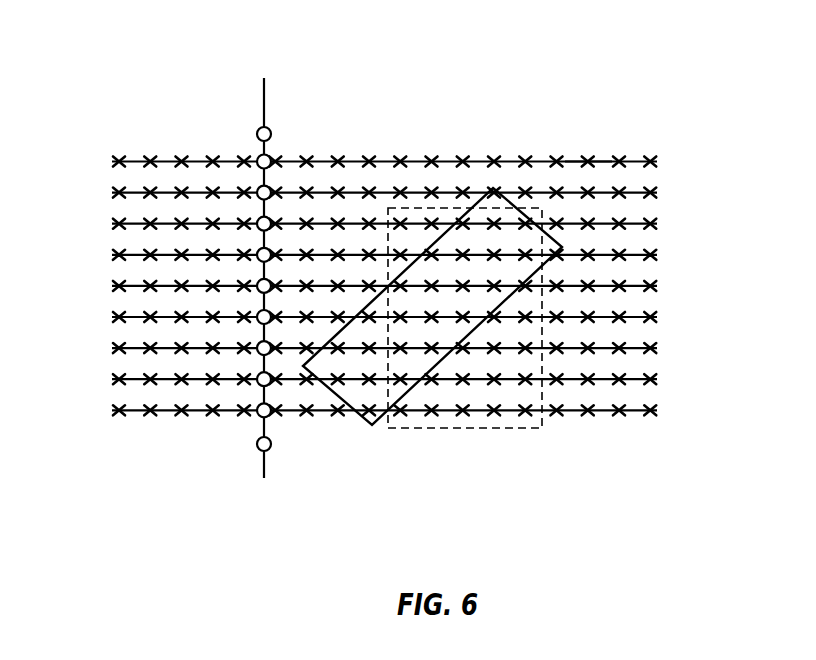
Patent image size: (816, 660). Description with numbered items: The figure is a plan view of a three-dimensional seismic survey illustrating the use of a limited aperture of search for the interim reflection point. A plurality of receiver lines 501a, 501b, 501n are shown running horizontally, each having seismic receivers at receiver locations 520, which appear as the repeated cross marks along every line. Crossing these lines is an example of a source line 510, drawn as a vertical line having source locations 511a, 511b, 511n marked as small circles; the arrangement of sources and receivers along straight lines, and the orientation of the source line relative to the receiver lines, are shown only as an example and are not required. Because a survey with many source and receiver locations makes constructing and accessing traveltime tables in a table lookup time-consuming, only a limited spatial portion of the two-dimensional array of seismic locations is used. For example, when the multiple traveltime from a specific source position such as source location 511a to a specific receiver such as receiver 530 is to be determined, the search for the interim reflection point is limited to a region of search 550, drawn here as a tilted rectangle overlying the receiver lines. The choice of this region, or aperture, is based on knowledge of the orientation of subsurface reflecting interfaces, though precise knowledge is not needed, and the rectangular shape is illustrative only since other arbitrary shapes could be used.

The source line 510 is at (319, 253).
The source location 511a is at (324, 465).
The source location 511b is at (207, 435).
The source location 511n is at (324, 114).
The receiver locations 520 is at (107, 111).
The receiver 530 is at (547, 136).
The receiver line 501a is at (432, 137).
The receiver line 501b is at (432, 167).
The receiver line 501n is at (434, 385).
The region of search 550 is at (478, 335).